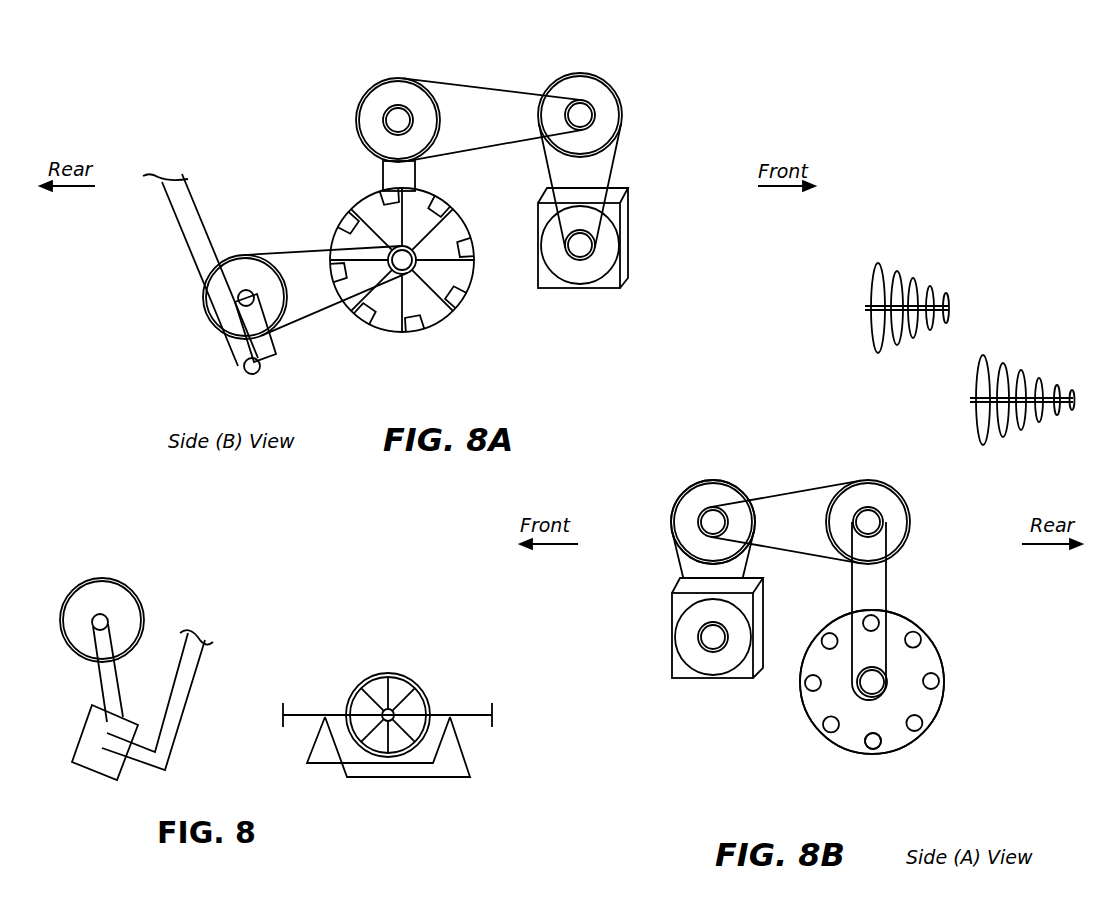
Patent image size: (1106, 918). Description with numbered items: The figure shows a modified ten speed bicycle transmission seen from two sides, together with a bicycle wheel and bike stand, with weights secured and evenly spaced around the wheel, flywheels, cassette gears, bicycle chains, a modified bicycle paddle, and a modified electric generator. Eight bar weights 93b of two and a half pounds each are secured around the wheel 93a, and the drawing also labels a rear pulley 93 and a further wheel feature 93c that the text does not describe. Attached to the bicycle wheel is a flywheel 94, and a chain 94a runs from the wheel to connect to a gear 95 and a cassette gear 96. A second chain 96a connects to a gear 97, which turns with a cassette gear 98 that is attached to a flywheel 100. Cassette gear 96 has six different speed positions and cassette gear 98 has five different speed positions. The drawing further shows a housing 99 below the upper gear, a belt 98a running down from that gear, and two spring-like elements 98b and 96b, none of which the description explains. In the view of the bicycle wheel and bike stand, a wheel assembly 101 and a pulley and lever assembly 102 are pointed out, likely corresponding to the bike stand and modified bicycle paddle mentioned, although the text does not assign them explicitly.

In FIG. 8A, the rear pulley 93 is at (205, 301).
In FIG. 8A, the wheel 93a is at (470, 291).
In FIG. 8A, the bar weights 93b is at (388, 333).
In FIG. 8B, the bar weights 93b is at (942, 650).
In FIG. 8B, the wheel hole 93c is at (868, 755).
In FIG. 8B, the flywheel 94 is at (836, 700).
In FIG. 8A, the chain 94a is at (383, 172).
In FIG. 8B, the chain 94a is at (887, 580).
In FIG. 8B, the gear 95 is at (878, 508).
In FIG. 8B, the cassette gear 96 is at (830, 498).
In FIG. 8A, the chain 96a is at (475, 87).
In FIG. 8B, the chain 96a is at (790, 551).
In FIG. 8A, the spring 96b is at (1021, 372).
In FIG. 8B, the gear 97 is at (688, 510).
In FIG. 8A, the cassette gear 98 is at (580, 73).
In FIG. 8B, the cassette gear 98 is at (710, 490).
In FIG. 8A, the belt 98a is at (617, 131).
In FIG. 8B, the belt 98a is at (683, 557).
In FIG. 8A, the spring 98b is at (913, 282).
In FIG. 8A, the motor housing 99 is at (628, 220).
In FIG. 8B, the motor housing 99 is at (672, 624).
In FIG. 8A, the flywheel 100 is at (575, 272).
In FIG. 8, the wheel assembly 101 is at (393, 639).
In FIG. 8, the pulley and lever assembly 102 is at (160, 602).